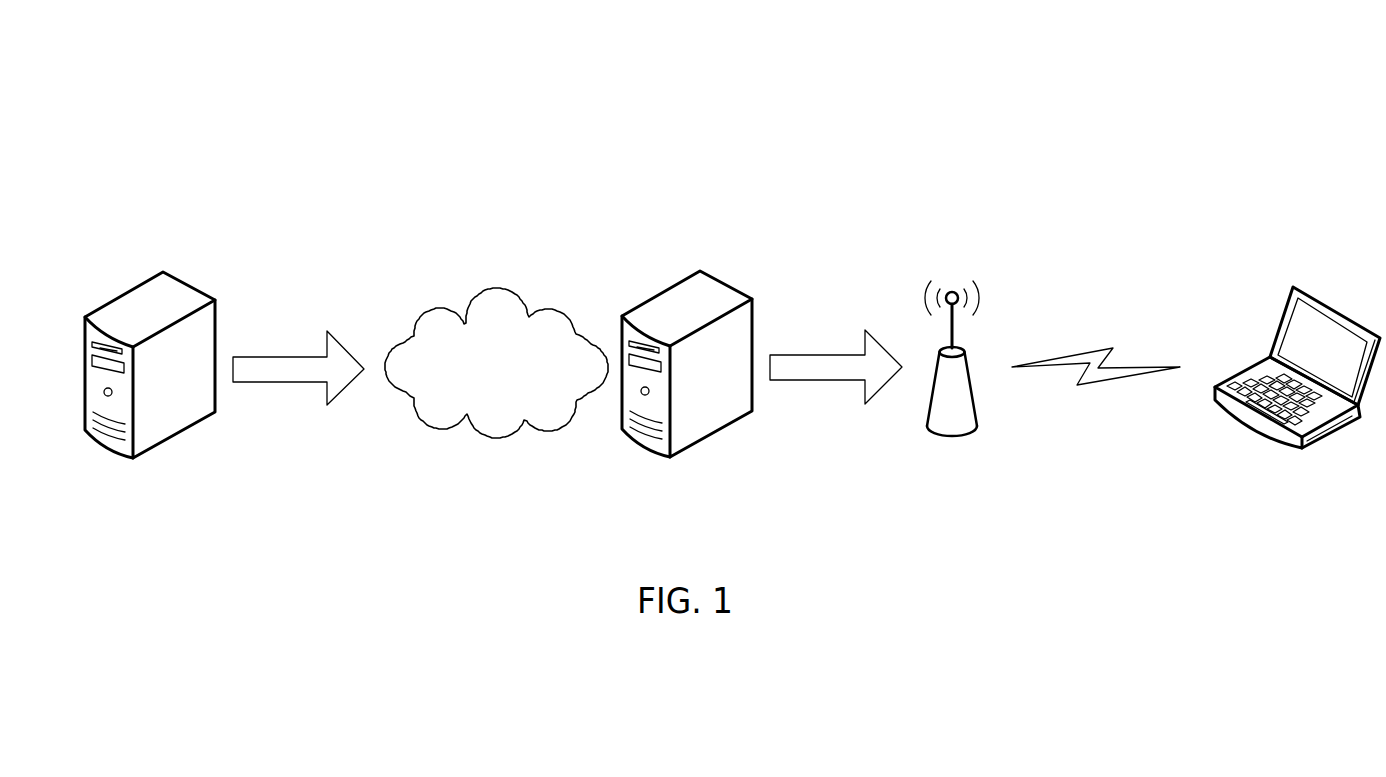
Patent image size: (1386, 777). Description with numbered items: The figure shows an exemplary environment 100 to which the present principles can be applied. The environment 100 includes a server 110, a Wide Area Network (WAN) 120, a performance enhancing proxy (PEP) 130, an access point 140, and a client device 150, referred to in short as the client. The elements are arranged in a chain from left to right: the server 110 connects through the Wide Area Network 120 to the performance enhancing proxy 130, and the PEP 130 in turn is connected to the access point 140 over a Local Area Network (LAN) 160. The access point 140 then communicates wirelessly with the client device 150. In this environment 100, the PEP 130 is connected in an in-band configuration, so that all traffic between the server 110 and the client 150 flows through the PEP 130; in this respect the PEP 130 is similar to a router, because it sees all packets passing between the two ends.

The environment 100 is at (811, 53).
The server 110 is at (163, 272).
The Wide Area Network (WAN) 120 is at (495, 287).
The performance enhancing proxy (PEP) 130 is at (700, 270).
The access point 140 is at (953, 438).
The client device 150 is at (1290, 285).
The Local Area Network (LAN) 160 is at (847, 259).